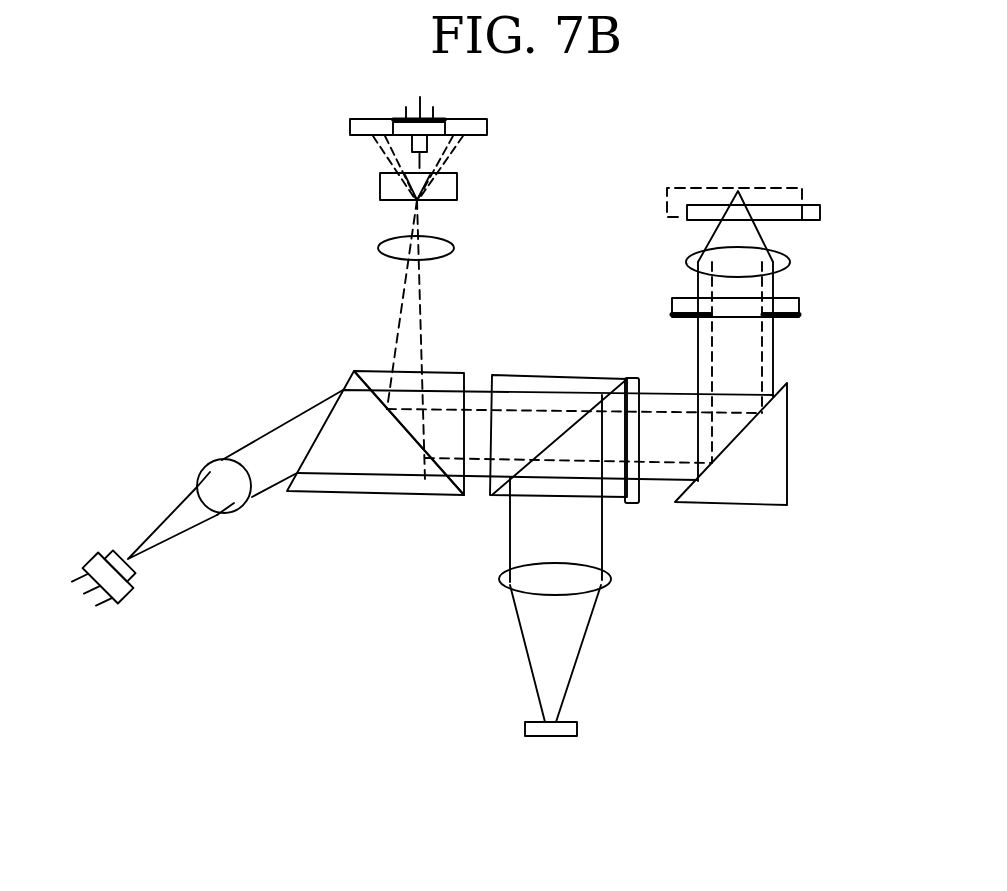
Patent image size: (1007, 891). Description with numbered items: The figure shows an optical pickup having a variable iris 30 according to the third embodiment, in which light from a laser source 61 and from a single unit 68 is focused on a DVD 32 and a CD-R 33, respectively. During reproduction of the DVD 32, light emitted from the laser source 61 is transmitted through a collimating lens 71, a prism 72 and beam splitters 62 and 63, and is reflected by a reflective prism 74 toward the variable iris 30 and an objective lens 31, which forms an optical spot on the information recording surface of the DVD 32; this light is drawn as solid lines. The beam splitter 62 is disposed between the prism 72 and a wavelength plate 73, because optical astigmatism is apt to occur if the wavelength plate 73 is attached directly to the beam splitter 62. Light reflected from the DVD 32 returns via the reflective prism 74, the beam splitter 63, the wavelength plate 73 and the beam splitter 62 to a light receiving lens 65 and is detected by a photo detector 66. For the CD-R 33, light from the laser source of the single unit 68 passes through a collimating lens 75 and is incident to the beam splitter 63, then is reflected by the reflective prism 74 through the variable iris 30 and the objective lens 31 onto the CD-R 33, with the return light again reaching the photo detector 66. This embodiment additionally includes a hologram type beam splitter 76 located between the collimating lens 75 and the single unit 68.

The variable iris 30 is at (799, 307).
The objective lens 31 is at (790, 262).
The DVD 32 is at (820, 212).
The CD-R 33 is at (667, 206).
The laser source 61 is at (90, 553).
The beam splitter 62 is at (437, 371).
The beam splitter 63 is at (548, 375).
The light receiving lens 65 is at (611, 580).
The photo detector 66 is at (577, 731).
The single unit 68 is at (487, 127).
The collimating lens 71 is at (203, 465).
The prism 72 is at (318, 492).
The wavelength plate 73 is at (636, 378).
The reflective prism 74 is at (787, 443).
The collimating lens 75 is at (454, 250).
The hologram type beam splitter 76 is at (457, 186).